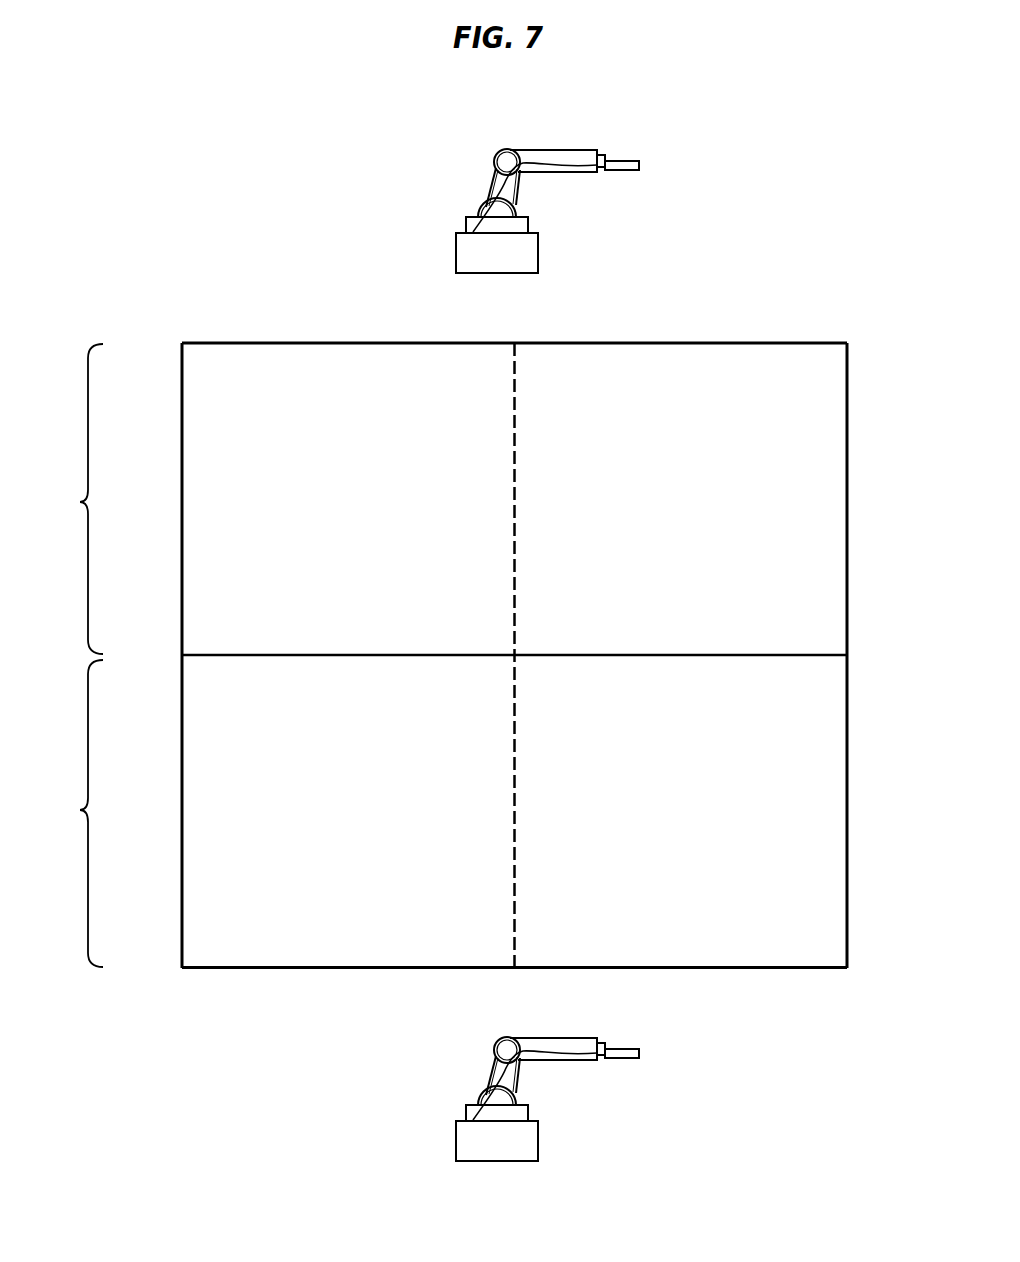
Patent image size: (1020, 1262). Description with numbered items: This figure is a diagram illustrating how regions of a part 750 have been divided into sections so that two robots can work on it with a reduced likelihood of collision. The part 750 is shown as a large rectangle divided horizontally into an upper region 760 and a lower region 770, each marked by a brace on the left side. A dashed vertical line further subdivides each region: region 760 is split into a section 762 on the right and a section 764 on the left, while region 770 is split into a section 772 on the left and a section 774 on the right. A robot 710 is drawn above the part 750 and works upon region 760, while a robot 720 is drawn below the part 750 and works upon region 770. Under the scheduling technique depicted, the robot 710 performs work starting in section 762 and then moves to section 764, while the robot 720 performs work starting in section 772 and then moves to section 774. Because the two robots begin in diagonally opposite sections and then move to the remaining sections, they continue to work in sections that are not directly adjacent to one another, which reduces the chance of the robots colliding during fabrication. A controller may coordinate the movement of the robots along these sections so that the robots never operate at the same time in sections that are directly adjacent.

The robot 710 is at (456, 253).
The robot 720 is at (456, 1140).
The part 750 is at (119, 294).
The region 760 is at (440, 498).
The section 762 is at (827, 504).
The section 764 is at (205, 527).
The region 770 is at (440, 814).
The section 772 is at (208, 830).
The section 774 is at (820, 790).